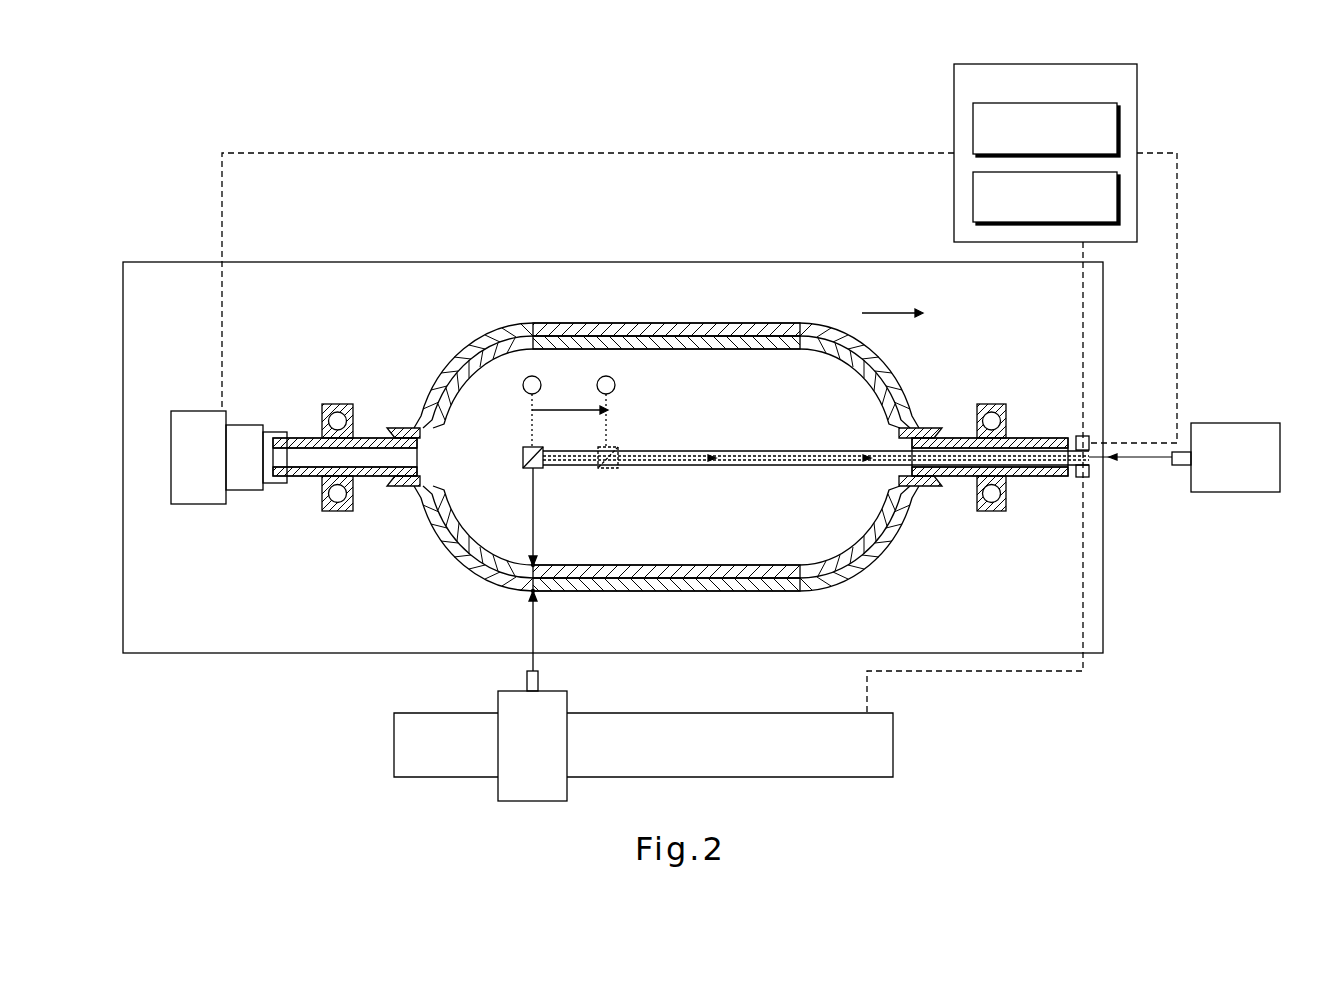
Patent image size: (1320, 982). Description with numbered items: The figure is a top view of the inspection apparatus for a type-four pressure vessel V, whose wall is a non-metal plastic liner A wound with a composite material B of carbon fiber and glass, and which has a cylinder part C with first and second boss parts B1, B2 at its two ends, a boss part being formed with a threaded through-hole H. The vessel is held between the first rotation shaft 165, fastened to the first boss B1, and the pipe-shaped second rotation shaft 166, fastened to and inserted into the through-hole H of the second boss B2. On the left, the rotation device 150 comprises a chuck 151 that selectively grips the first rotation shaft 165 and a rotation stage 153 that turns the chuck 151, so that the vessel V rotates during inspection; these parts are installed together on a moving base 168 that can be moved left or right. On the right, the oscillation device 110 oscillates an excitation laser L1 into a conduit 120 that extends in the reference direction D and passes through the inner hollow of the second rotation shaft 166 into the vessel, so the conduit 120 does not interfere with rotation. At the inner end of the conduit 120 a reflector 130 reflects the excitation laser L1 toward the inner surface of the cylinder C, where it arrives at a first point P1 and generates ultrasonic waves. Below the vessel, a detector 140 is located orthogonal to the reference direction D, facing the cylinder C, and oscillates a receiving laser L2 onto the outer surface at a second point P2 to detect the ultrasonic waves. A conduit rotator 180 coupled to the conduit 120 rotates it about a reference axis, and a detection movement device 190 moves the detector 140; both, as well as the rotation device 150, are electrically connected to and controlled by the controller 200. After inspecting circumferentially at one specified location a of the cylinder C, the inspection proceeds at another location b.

The oscillation device 110 is at (1236, 423).
The conduit 120 is at (787, 450).
The reflector 130 is at (522, 456).
The detector 140 is at (567, 750).
The rotation device 150 is at (229, 409).
The chuck 151 is at (245, 428).
The rotation stage 153 is at (190, 418).
The first rotation shaft 165 is at (373, 437).
The second rotation shaft 166 is at (955, 437).
The moving base 168 is at (1103, 612).
The conduit rotator 180 is at (1076, 437).
The detection movement device 190 is at (893, 750).
The controller 200 is at (1137, 82).
The pressure vessel V is at (664, 406).
The liner A is at (702, 346).
The composite material B is at (790, 324).
The cylinder part C is at (536, 324).
The first boss part B1 is at (413, 425).
The second boss part B2 is at (917, 425).
The through-hole H is at (900, 437).
The reference direction D is at (903, 313).
The excitation laser L1 is at (535, 510).
The receiving laser L2 is at (535, 647).
The first point P1 is at (538, 562).
The second point P2 is at (538, 596).
The specified location a is at (532, 411).
The another location b is at (606, 411).